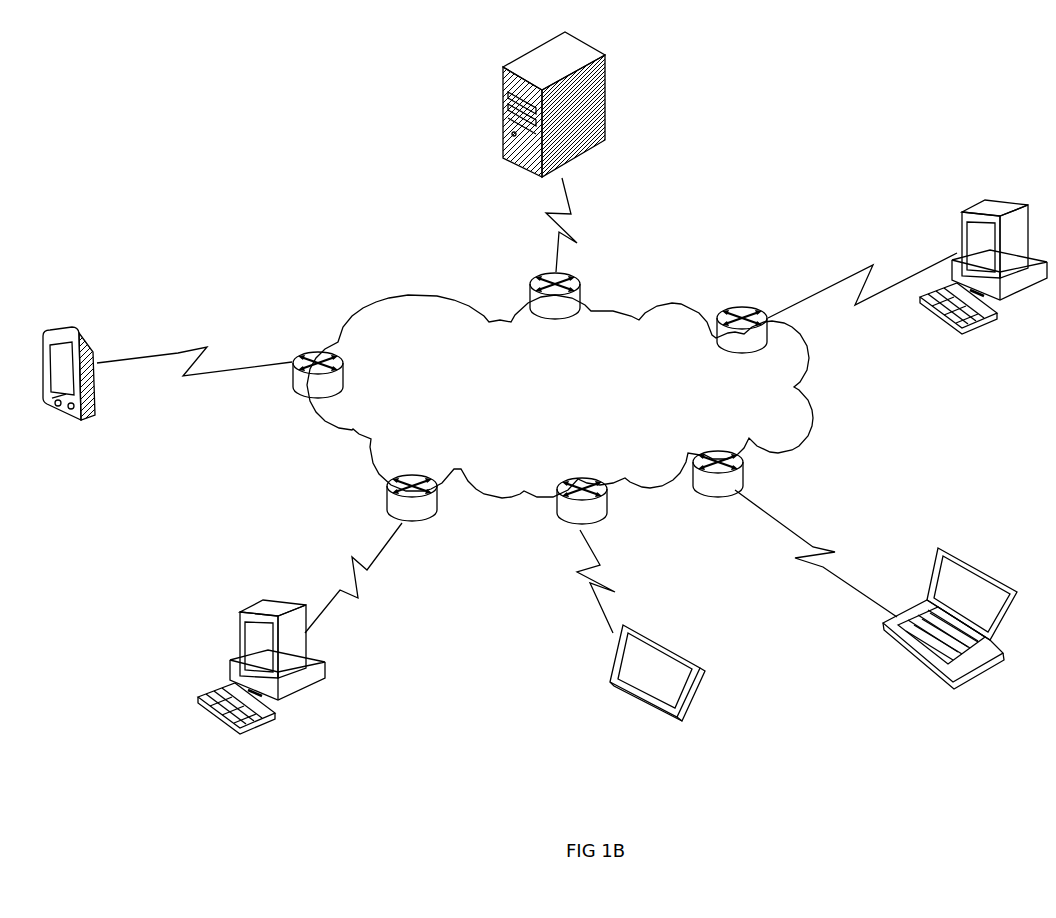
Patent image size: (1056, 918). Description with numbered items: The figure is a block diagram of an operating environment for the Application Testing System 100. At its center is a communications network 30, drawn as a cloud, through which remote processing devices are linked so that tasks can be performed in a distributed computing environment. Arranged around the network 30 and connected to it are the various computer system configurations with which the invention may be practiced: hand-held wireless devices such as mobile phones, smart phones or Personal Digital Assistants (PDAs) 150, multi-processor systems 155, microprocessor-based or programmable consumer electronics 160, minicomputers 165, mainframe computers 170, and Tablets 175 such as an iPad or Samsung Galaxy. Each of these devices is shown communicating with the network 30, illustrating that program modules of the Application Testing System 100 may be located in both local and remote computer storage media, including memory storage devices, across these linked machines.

The Application Testing System 100 is at (289, 192).
The communications network 30 is at (560, 396).
The hand-held wireless devices such as mobile phones, smart phones or Personal Digit 150 is at (69, 395).
The multi-processor systems 155 is at (261, 670).
The microprocessor-based or programmable consumer electronics 160 is at (983, 268).
The minicomputers 165 is at (958, 618).
The mainframe computers 170 is at (563, 104).
The Tablets 175 is at (664, 688).